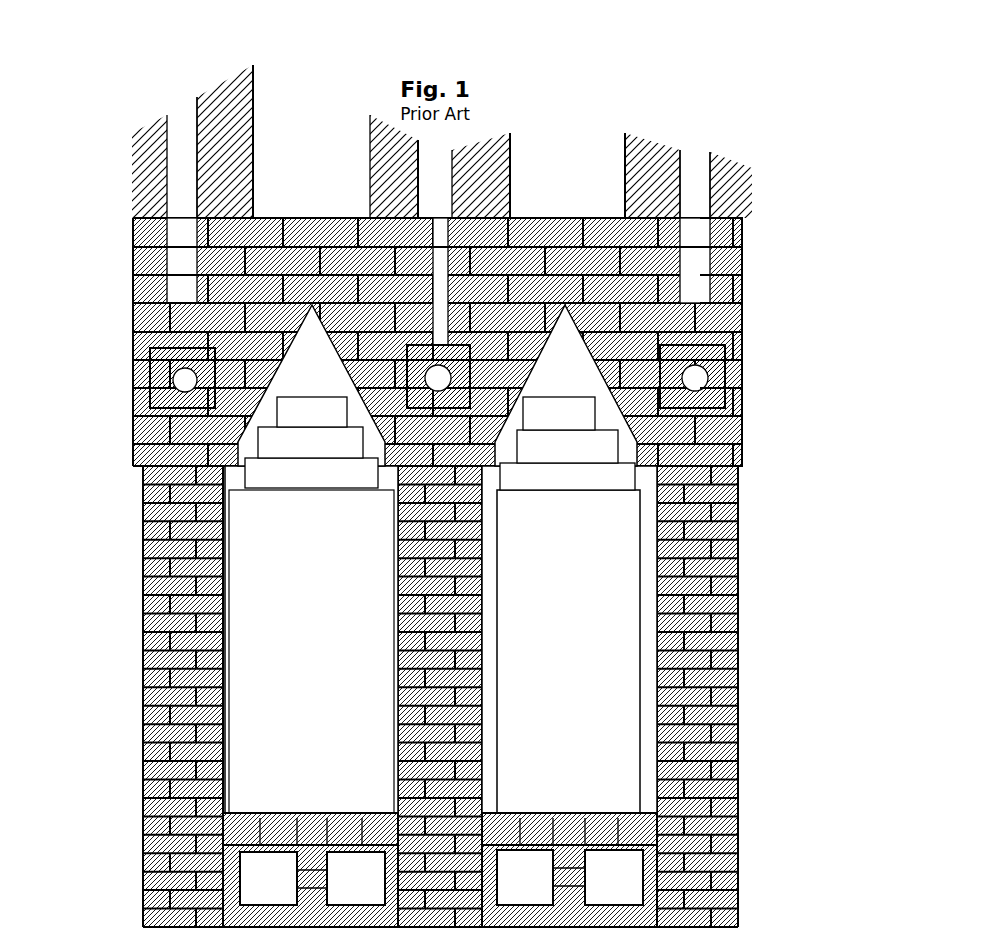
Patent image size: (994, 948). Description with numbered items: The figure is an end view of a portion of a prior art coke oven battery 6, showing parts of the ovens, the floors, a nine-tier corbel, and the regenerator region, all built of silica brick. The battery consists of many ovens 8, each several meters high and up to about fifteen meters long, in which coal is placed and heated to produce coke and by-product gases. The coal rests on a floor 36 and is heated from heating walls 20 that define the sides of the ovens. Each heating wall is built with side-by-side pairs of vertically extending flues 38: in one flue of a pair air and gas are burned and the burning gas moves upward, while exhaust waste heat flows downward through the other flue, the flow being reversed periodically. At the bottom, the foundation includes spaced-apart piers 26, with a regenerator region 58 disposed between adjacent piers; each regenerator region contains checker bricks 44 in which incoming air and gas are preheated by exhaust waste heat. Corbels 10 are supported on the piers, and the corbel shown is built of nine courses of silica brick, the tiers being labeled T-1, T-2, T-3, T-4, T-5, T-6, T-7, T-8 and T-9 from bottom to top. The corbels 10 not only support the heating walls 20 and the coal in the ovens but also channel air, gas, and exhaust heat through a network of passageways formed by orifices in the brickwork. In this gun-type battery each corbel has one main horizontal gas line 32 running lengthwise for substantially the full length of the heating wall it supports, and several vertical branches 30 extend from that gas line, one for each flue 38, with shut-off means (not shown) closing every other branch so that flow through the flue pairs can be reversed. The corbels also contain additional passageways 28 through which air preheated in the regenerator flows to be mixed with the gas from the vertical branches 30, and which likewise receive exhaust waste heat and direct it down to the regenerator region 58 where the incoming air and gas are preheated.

The coke oven battery 6 is at (757, 165).
The oven 8 is at (313, 100).
The corbel 10 is at (548, 218).
The heating wall 20 is at (255, 63).
The pier 26 is at (396, 640).
The additional passageway 28 is at (135, 297).
The vertical branch 30 is at (432, 318).
The main horizontal gas line 32 is at (170, 386).
The floor 36 is at (311, 224).
The flue 38 is at (181, 112).
The checker brick 44 is at (255, 690).
The regenerator region 58 is at (293, 421).
The first tier T-1 is at (746, 452).
The second tier T-2 is at (746, 423).
The third tier T-3 is at (746, 395).
The fourth tier T-4 is at (746, 366).
The fifth tier T-5 is at (746, 338).
The sixth tier T-6 is at (746, 308).
The seventh tier T-7 is at (746, 280).
The eighth tier T-8 is at (746, 252).
The ninth tier T-9 is at (746, 222).